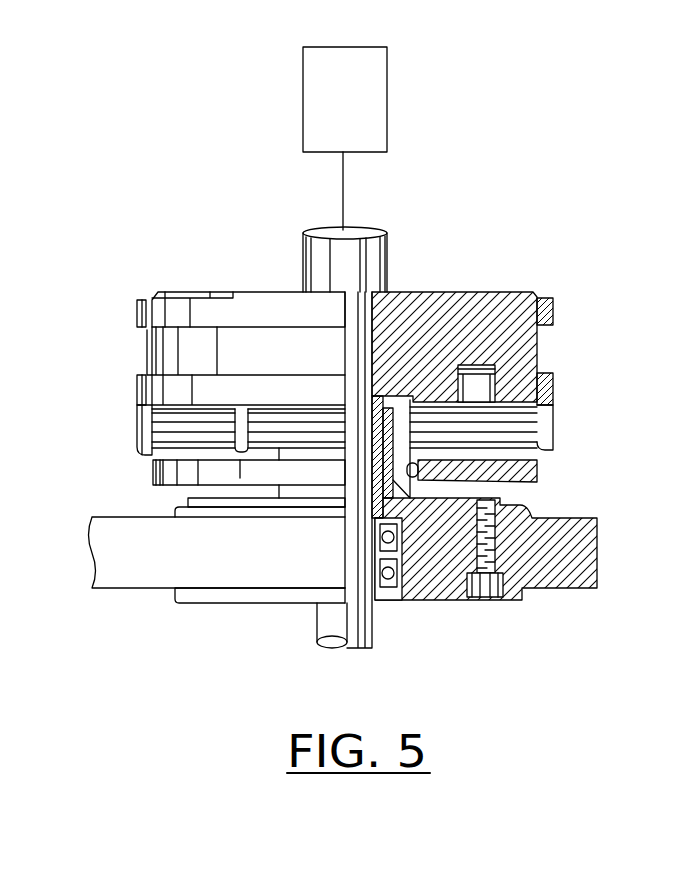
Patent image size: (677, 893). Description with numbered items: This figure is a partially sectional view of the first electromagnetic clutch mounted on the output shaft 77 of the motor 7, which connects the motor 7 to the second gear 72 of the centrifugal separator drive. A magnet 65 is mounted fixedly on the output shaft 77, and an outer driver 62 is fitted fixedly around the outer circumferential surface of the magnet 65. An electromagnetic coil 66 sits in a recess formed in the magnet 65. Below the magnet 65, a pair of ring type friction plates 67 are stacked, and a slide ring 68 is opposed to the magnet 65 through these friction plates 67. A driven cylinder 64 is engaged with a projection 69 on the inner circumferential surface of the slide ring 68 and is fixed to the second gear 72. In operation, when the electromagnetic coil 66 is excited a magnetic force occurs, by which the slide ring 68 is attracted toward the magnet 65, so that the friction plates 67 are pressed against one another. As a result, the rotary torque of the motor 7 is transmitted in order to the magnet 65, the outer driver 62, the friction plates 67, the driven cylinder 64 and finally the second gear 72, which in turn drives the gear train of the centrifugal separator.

The motor 7 is at (387, 100).
The output shaft 77 is at (380, 245).
The magnet 65 is at (502, 292).
The electromagnetic coil 66 is at (497, 372).
The outer driver 62 is at (553, 390).
The friction plates 67 is at (537, 413).
The slide ring 68 is at (537, 470).
The projection 69 is at (412, 470).
The driven cylinder 64 is at (393, 480).
The second gear 72 is at (585, 588).